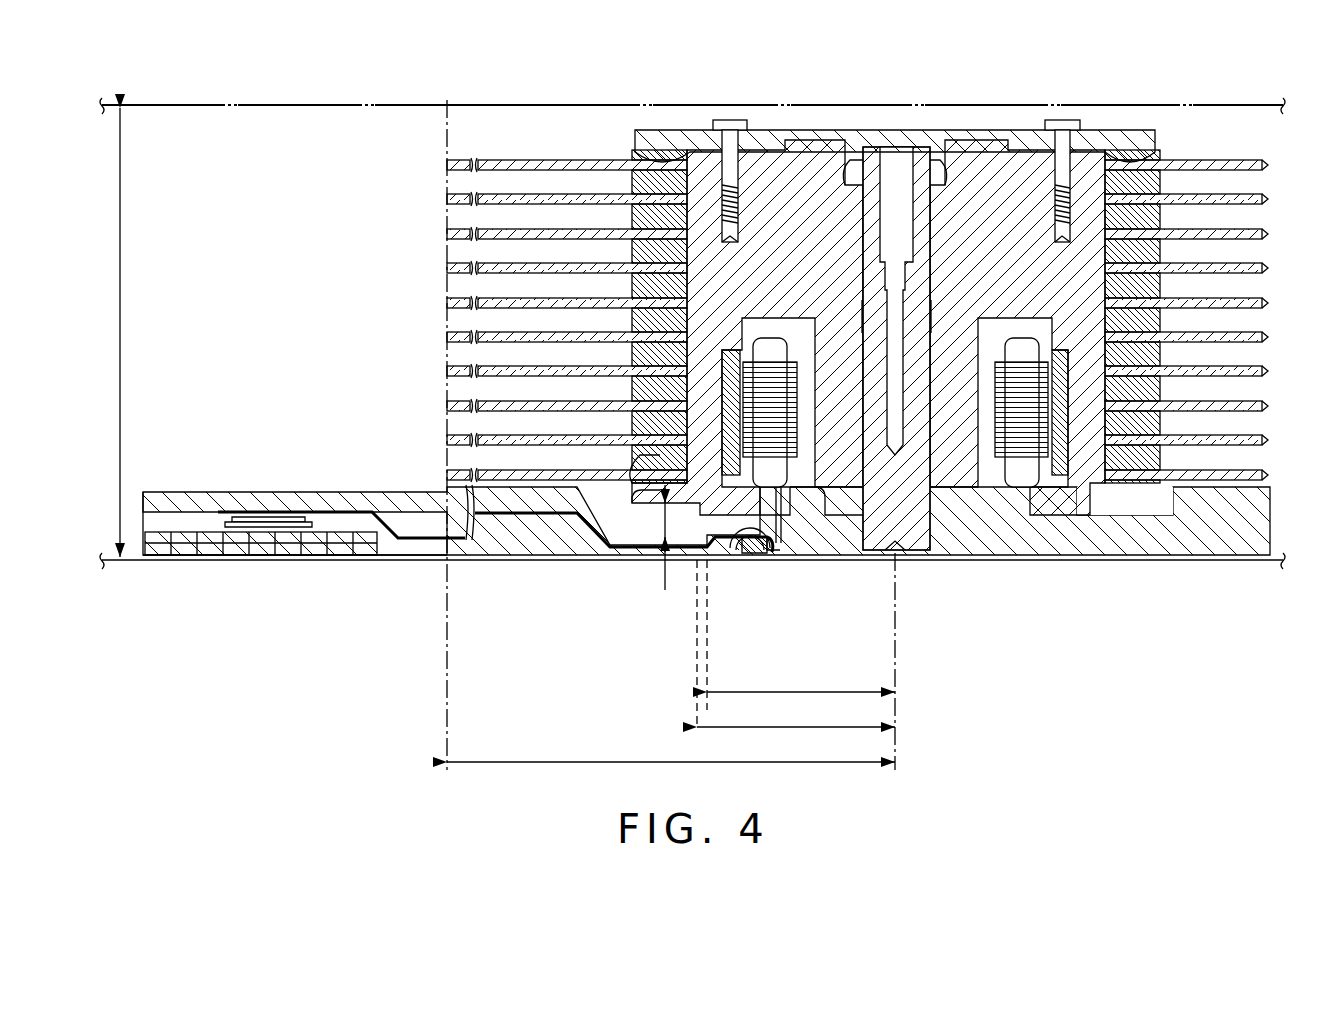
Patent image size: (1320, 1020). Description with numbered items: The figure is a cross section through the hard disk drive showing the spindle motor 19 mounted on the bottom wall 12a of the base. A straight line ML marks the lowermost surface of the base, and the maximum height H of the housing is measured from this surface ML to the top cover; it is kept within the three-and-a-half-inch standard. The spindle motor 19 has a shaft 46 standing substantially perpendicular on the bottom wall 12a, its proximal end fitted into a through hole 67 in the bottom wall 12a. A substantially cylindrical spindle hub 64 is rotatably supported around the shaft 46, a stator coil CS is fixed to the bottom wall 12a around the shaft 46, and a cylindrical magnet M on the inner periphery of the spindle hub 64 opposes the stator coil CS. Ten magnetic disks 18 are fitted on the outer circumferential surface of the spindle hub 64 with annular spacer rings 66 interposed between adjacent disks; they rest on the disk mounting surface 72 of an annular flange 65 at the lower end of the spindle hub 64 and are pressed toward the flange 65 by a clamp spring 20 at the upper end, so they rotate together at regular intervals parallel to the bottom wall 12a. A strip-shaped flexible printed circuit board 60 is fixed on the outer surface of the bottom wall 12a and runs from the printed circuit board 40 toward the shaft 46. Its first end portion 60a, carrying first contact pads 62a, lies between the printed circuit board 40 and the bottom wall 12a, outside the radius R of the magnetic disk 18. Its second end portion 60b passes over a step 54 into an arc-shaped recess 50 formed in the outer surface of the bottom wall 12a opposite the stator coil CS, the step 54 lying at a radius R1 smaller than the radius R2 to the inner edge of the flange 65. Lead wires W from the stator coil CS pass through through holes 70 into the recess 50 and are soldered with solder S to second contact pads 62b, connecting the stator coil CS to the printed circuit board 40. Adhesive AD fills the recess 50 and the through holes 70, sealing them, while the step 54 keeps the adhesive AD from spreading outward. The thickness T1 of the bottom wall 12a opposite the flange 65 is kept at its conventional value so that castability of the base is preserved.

The spindle motor 19 is at (1149, 96).
The magnetic disk 18 is at (527, 267).
The clamp spring 20 is at (770, 145).
The spindle hub 64 is at (970, 212).
The spacer ring 66 is at (1165, 318).
The maximum height of the housing H is at (106, 332).
The bottom wall 12a is at (1220, 538).
The printed circuit board 40 is at (183, 549).
The lowermost surface ML is at (330, 557).
The flexible printed circuit board 60 is at (418, 541).
The first contact pad 62a is at (243, 517).
The first end portion 60a is at (300, 512).
The disk mounting surface 72 is at (638, 455).
The flange 65 is at (645, 501).
The thickness of the bottom wall T1 is at (664, 541).
The second end portion 60b is at (703, 550).
The step 54 is at (715, 548).
The second contact pad 62b is at (742, 560).
The solder S is at (750, 557).
The adhesive AD is at (768, 561).
The recess 50 is at (786, 551).
The through hole 70 is at (805, 517).
The lead wire W is at (782, 490).
The shaft 46 is at (918, 505).
The through hole 67 is at (940, 475).
The stator coil CS is at (790, 372).
The magnet M is at (733, 360).
The radius R1 is at (801, 677).
The radius R2 is at (796, 712).
The radius R is at (671, 747).